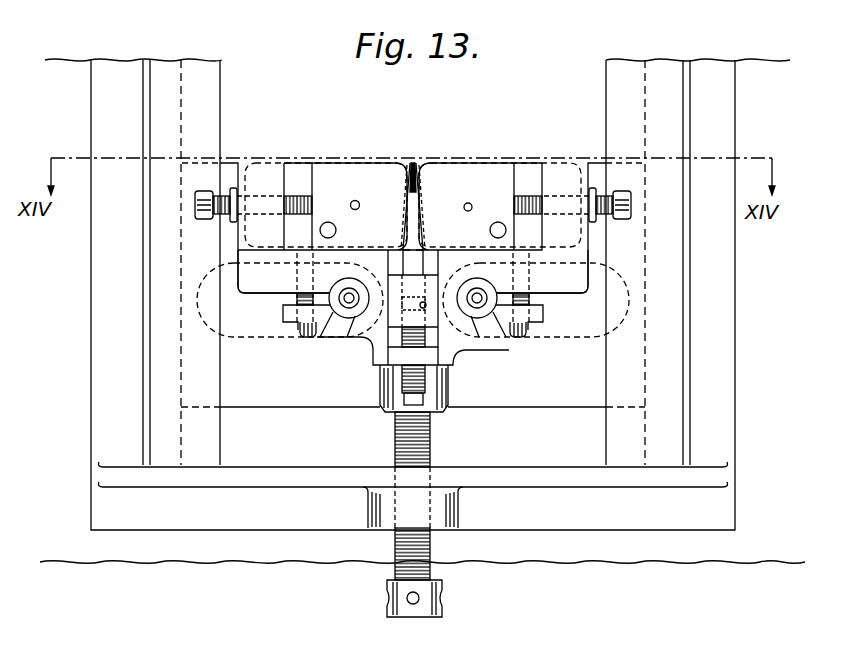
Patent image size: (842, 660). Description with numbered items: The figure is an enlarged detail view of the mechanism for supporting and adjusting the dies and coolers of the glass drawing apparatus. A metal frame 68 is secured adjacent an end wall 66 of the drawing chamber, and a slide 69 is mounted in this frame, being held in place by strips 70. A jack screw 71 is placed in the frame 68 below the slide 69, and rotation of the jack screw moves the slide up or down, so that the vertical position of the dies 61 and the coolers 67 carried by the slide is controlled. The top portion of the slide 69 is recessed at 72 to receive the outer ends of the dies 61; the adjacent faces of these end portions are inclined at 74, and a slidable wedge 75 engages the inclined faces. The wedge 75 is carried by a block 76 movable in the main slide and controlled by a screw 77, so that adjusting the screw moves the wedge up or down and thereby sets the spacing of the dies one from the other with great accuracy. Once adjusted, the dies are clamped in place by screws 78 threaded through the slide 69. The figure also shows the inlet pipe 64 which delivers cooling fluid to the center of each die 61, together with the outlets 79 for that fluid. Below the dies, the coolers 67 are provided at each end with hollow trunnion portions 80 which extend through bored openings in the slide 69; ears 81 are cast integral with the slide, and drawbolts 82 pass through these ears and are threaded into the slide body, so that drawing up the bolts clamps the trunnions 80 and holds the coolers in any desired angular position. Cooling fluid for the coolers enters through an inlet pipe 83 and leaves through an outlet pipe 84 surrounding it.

The die 61 is at (258, 175).
The inlet pipe 64 is at (355, 200).
The end wall 66 is at (653, 558).
The cooler 67 is at (575, 338).
The metal frame 68 is at (727, 291).
The slide 69 is at (413, 271).
The strip 70 is at (667, 322).
The jack screw 71 is at (430, 442).
The recess 72 is at (540, 180).
The inclined face 74 is at (423, 228).
The wedge 75 is at (416, 247).
The block 76 is at (413, 298).
The screw 77 is at (427, 380).
The clamping screw 78 is at (620, 220).
The outlet 79 is at (497, 222).
The trunnion portion 80 is at (476, 322).
The ear 81 is at (543, 312).
The drawbolt 82 is at (527, 336).
The inlet pipe 83 is at (349, 305).
The outlet pipe 84 is at (340, 305).